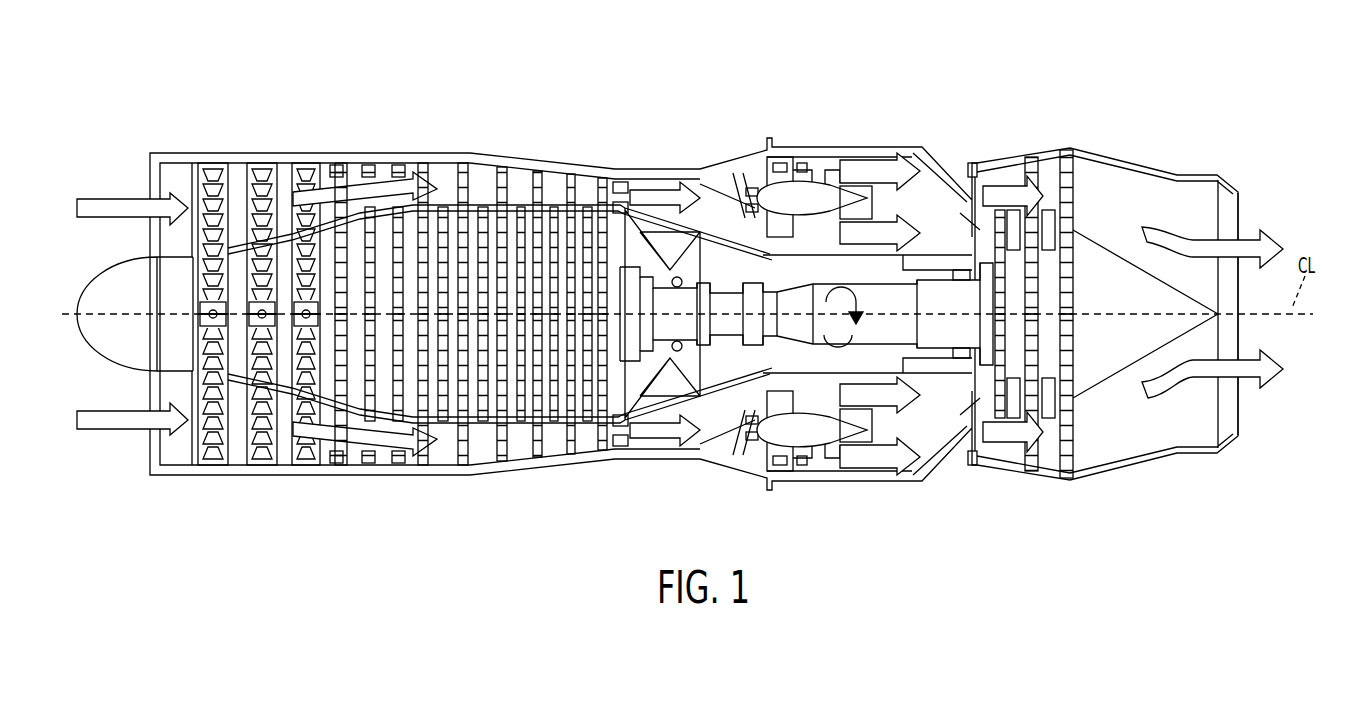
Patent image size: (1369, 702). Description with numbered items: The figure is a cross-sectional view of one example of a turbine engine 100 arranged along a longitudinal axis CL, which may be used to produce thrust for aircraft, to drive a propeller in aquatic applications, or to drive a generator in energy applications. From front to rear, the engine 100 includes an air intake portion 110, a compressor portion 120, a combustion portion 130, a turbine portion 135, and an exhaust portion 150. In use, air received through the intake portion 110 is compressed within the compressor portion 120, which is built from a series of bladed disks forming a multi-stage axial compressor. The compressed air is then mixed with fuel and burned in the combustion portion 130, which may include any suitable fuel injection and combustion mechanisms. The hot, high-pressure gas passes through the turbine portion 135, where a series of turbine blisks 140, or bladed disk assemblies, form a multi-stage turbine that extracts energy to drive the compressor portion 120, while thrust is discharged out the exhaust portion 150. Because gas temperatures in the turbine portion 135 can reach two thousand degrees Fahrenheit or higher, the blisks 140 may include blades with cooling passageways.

The turbine engine 100 is at (1182, 83).
The air intake portion 110 is at (160, 443).
The compressor portion 120 is at (475, 250).
The combustion portion 130 is at (720, 440).
The turbine portion 135 is at (1017, 348).
The turbine blisks 140 is at (1077, 415).
The exhaust portion 150 is at (1262, 323).